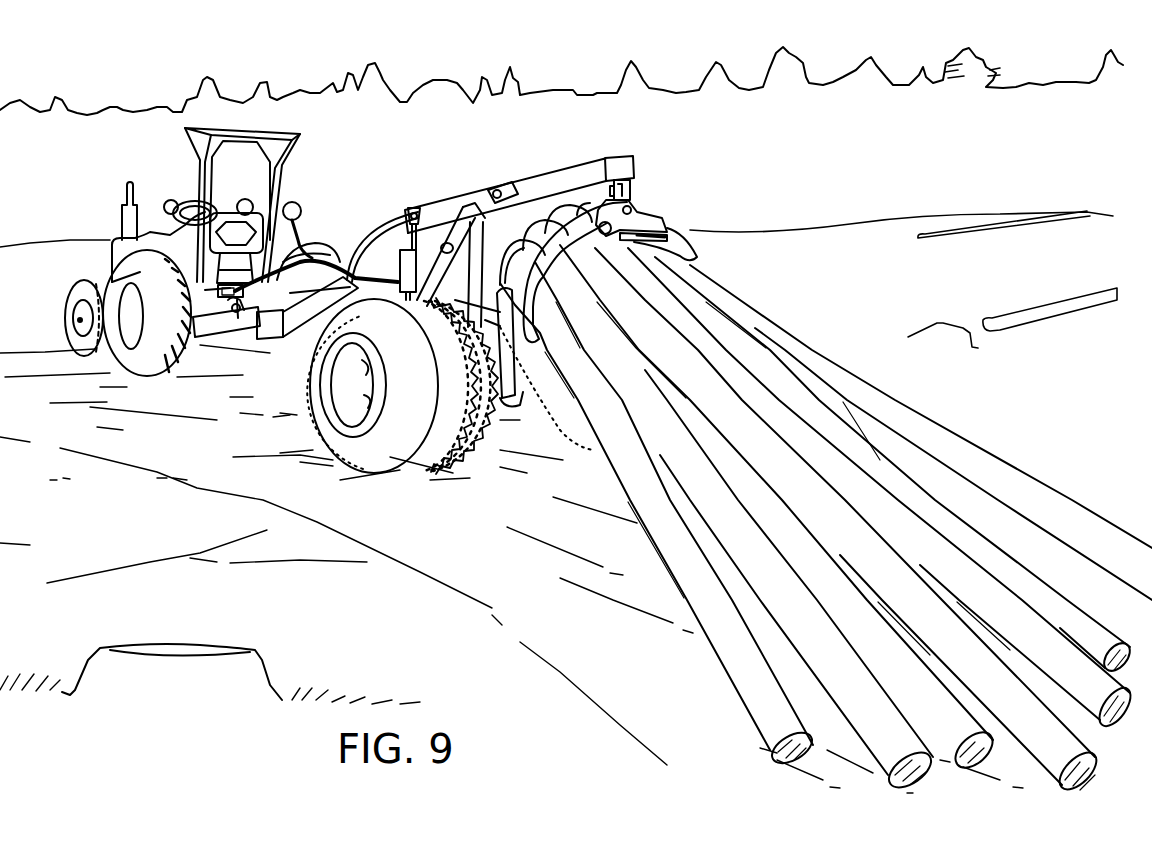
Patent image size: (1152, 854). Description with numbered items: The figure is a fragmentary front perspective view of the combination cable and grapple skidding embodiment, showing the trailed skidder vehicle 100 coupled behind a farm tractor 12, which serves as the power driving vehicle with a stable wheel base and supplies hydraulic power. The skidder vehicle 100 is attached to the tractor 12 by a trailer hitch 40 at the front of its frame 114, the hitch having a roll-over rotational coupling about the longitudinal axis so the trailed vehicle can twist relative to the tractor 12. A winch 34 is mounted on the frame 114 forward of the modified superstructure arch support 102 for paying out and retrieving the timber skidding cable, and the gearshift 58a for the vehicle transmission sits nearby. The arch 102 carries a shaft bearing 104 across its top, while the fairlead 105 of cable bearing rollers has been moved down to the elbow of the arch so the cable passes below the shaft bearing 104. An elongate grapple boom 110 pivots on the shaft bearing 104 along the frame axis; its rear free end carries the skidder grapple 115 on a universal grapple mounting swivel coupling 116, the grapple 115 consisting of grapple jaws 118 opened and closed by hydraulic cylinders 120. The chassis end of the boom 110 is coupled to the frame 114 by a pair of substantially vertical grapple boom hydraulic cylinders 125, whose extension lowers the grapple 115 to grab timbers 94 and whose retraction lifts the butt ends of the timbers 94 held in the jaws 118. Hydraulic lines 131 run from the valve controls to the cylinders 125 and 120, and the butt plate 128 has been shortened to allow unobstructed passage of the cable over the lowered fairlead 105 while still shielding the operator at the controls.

The farm tractor 12 is at (165, 180).
The winch 34 is at (346, 237).
The trailer hitch 40 is at (238, 333).
The gearshift 58a is at (304, 215).
The timbers 94 is at (806, 346).
The trailed skidder vehicle 100 is at (410, 158).
The superstructure arch support 102 is at (470, 205).
The shaft bearing 104 is at (495, 185).
The fairlead 105 is at (527, 212).
The grapple boom 110 is at (573, 165).
The frame 114 is at (294, 352).
The skidder grapple 115 is at (710, 221).
The universal grapple mounting swivel coupling 116 is at (636, 190).
The grapple jaws 118 is at (700, 263).
The grapple jaw hydraulic cylinders 120 is at (627, 225).
The grapple boom hydraulic cylinders 125 is at (403, 255).
The butt plate 128 is at (552, 382).
The hydraulic lines 131 is at (400, 217).